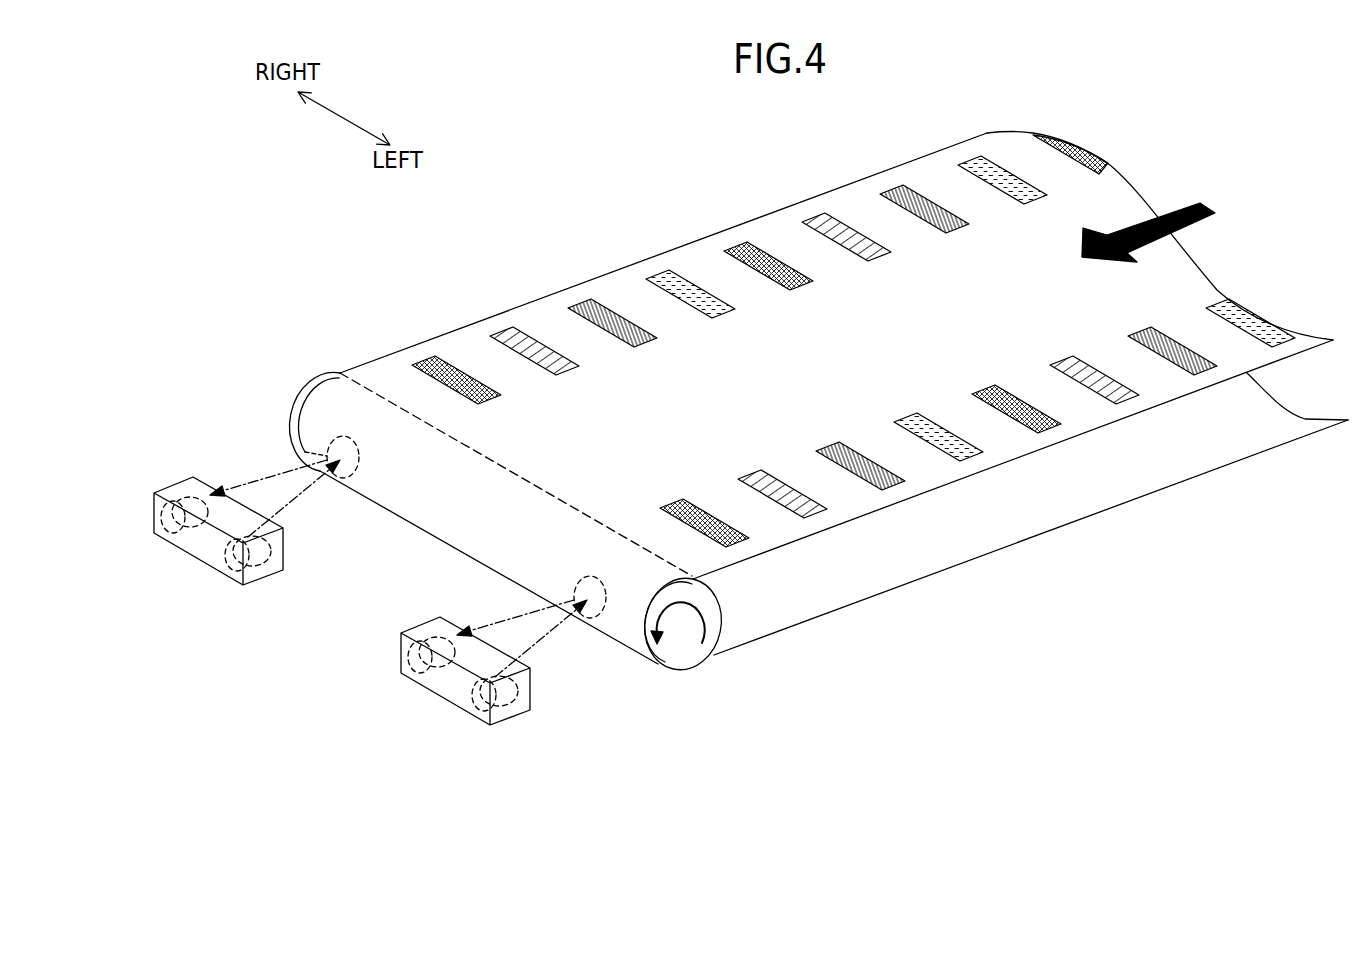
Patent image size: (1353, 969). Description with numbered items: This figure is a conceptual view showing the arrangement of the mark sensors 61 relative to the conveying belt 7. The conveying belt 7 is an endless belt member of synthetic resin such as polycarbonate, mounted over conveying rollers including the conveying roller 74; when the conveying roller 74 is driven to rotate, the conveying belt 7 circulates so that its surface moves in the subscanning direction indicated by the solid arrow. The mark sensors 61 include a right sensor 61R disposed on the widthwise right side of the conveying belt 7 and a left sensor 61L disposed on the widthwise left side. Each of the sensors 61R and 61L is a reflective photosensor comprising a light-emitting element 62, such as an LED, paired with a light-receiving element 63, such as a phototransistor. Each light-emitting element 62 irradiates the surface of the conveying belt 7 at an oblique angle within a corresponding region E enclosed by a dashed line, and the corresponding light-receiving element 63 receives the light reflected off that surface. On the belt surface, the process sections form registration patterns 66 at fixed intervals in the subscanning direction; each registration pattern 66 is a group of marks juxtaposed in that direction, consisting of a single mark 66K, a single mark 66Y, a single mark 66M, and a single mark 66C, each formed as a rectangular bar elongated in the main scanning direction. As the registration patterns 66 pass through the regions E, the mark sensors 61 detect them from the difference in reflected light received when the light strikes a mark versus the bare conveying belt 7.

The conveying belt 7 is at (579, 291).
The conveying roller 74 is at (680, 657).
The registration patterns 66 is at (845, 396).
The mark 66K is at (438, 358).
The mark 66C is at (828, 508).
The mark 66M is at (905, 478).
The mark 66Y is at (970, 372).
The mark sensors 61 is at (358, 611).
The right sensor 61R is at (267, 578).
The left sensor 61L is at (398, 643).
The light-emitting element 62 is at (313, 698).
The light-receiving element 63 is at (157, 535).
The region E is at (291, 407).